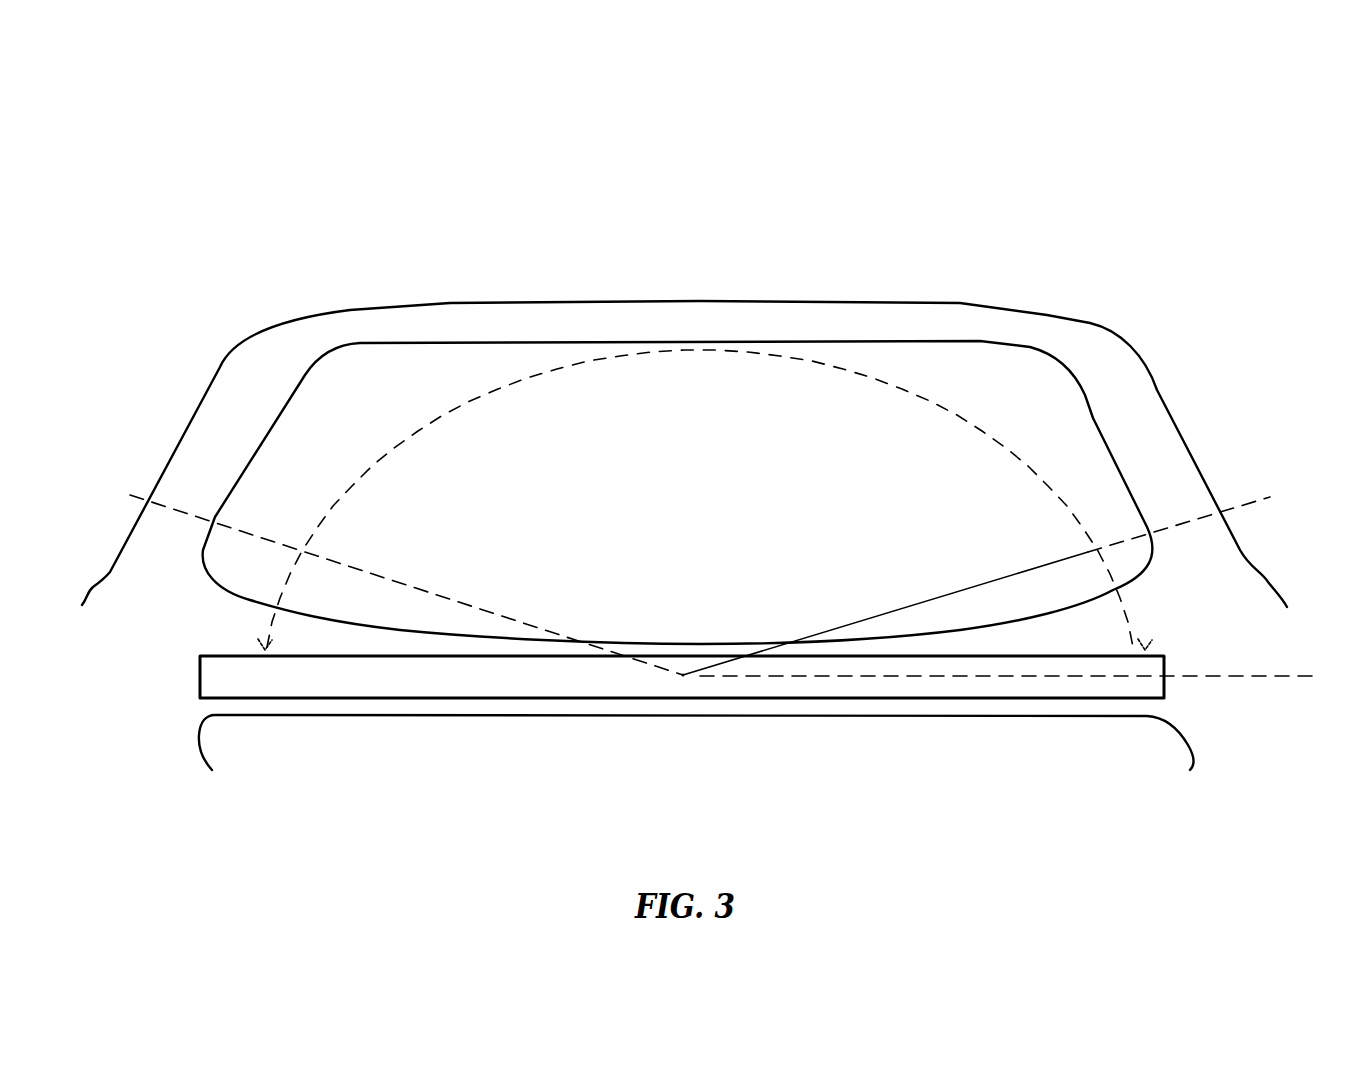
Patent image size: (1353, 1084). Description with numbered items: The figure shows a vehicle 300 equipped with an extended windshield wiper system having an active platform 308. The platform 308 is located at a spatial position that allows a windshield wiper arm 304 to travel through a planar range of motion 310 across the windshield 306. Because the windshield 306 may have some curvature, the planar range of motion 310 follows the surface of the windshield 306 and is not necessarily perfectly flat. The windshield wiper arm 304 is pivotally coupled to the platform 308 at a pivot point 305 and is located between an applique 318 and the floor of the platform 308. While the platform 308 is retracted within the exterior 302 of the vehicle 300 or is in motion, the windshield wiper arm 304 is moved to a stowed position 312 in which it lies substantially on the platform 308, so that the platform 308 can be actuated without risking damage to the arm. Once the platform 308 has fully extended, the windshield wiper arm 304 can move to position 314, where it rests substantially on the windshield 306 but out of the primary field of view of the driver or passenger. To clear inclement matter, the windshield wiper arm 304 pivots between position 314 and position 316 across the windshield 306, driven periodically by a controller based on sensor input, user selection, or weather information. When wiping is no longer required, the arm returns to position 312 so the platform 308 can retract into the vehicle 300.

The vehicle 300 is at (671, 104).
The exterior 302 is at (346, 309).
The windshield wiper arm 304 is at (968, 586).
The pivot point 305 is at (683, 673).
The windshield 306 is at (912, 340).
The platform 308 is at (227, 655).
The planar range of motion 310 is at (817, 362).
The position 312 is at (1262, 676).
The position 314 is at (1200, 520).
The position 316 is at (281, 545).
The applique 318 is at (202, 727).